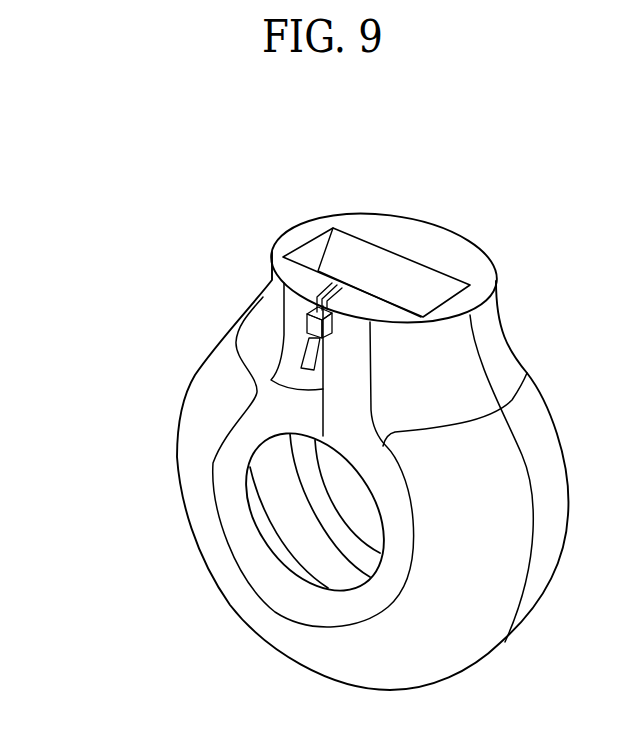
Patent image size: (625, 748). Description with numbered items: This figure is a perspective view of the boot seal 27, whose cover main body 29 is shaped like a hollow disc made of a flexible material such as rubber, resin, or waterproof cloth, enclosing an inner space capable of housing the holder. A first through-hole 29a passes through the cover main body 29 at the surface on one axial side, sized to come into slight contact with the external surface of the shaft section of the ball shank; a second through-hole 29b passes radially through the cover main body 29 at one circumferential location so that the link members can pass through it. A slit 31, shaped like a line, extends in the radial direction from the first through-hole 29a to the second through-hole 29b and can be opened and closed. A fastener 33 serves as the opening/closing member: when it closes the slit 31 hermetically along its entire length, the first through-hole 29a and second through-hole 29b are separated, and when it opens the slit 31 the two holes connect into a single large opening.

The boot seal 27 is at (104, 352).
The cover main body 29 is at (188, 456).
The first through-hole 29a is at (375, 517).
The second through-hole 29b is at (402, 277).
The slit 31 is at (272, 391).
The fastener 33 is at (309, 323).